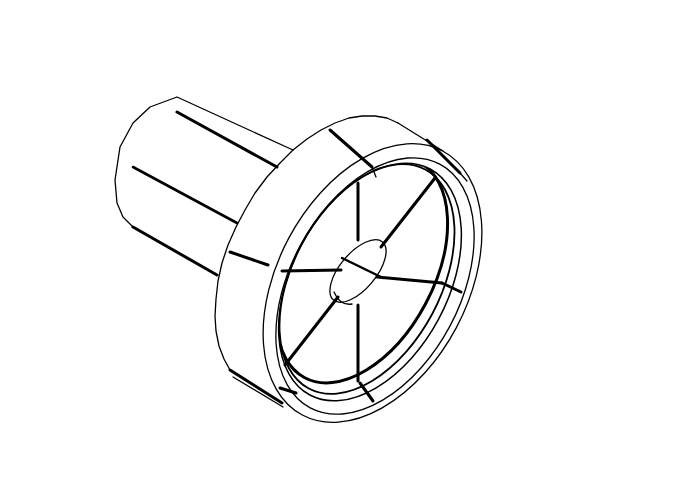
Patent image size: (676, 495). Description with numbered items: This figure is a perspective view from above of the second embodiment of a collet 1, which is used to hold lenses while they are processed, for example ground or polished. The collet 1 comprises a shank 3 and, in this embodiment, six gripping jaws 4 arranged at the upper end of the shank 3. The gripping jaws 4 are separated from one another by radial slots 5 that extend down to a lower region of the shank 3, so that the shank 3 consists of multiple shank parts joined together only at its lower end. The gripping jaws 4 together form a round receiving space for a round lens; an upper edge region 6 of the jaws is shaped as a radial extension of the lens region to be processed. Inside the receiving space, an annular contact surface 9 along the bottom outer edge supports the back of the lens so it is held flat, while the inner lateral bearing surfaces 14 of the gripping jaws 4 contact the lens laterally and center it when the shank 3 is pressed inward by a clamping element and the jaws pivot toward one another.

The collet 1 is at (102, 26).
The shank 3 is at (118, 207).
The gripping jaws 4 is at (388, 127).
The radial slots 5 is at (203, 123).
The upper edge region 6 is at (467, 184).
The contact surface 9 is at (407, 333).
The inner lateral bearing surfaces 14 is at (457, 258).